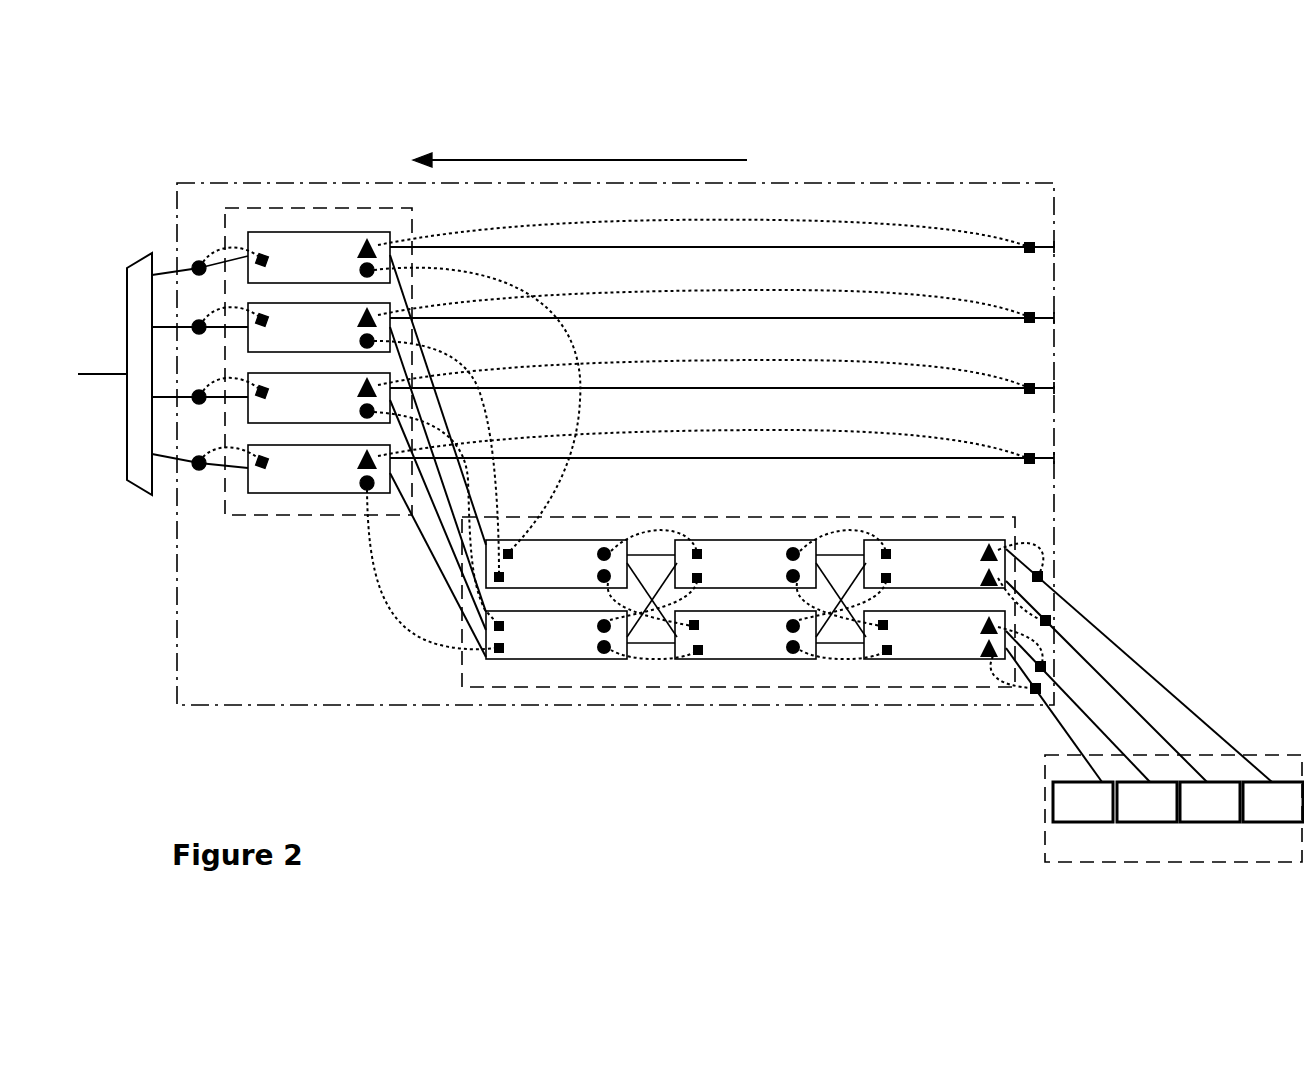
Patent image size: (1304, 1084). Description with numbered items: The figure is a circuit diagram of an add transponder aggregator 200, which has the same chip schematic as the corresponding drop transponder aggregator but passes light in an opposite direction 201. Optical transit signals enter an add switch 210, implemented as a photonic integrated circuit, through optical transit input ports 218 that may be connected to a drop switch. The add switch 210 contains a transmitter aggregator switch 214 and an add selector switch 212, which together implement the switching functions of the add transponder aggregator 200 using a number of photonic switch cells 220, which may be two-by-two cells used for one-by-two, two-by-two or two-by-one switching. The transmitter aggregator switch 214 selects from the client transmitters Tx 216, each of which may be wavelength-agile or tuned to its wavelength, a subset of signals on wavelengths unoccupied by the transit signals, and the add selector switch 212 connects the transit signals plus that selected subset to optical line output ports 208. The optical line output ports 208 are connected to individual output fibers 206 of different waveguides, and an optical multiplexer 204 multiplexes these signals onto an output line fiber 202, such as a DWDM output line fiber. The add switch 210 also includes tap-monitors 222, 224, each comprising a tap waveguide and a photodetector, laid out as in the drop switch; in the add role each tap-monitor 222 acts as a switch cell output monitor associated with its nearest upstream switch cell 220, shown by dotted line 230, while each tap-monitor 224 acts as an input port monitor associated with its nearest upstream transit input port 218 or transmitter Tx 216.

The add transponder aggregator 200 is at (668, 500).
The opposite direction 201 is at (580, 149).
The output line fiber 202 is at (78, 374).
The optical multiplexer 204 is at (140, 497).
The output fibers 206 is at (167, 460).
The optical line output ports 208 is at (175, 272).
The add switch 210 is at (615, 444).
The add selector switch 212 is at (318, 517).
The transmitter aggregator switch 214 is at (462, 677).
The client transmitters Tx 216 is at (1083, 822).
The optical transit input ports 218 is at (1054, 318).
The photonic switch cells 220 is at (604, 445).
The tap-monitor 222 is at (362, 487).
The tap-monitor 224 is at (368, 243).
The dotted line 230 is at (945, 232).